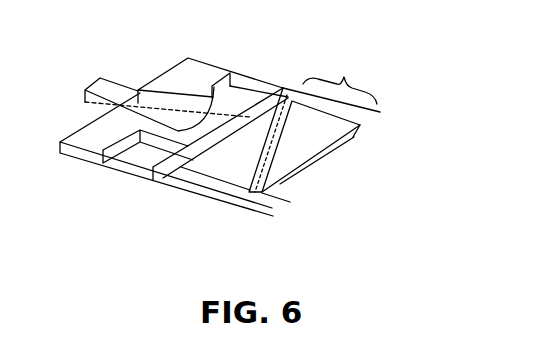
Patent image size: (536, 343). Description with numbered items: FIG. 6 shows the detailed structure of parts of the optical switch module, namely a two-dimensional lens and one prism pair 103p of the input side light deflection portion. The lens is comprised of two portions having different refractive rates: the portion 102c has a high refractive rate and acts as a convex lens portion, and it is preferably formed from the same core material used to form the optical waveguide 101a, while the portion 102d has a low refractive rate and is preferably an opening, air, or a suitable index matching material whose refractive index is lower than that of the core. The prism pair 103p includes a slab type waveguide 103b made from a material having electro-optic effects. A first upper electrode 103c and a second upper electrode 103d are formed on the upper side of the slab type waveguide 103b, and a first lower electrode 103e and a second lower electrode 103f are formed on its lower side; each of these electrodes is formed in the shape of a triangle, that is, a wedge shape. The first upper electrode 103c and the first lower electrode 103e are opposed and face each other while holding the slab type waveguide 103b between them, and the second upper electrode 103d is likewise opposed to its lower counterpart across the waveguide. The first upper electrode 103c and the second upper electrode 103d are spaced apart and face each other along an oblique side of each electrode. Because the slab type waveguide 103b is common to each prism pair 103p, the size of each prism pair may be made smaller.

The optical waveguide 101a is at (112, 82).
The lens portion 102c is at (192, 72).
The lens portion 102d is at (252, 90).
The slab type waveguide 103b is at (380, 112).
The first upper electrode 103c is at (207, 162).
The second upper electrode 103d is at (327, 130).
The first lower electrode 103e is at (227, 193).
The second lower electrode 103f is at (299, 178).
The prism pair 103p is at (340, 77).